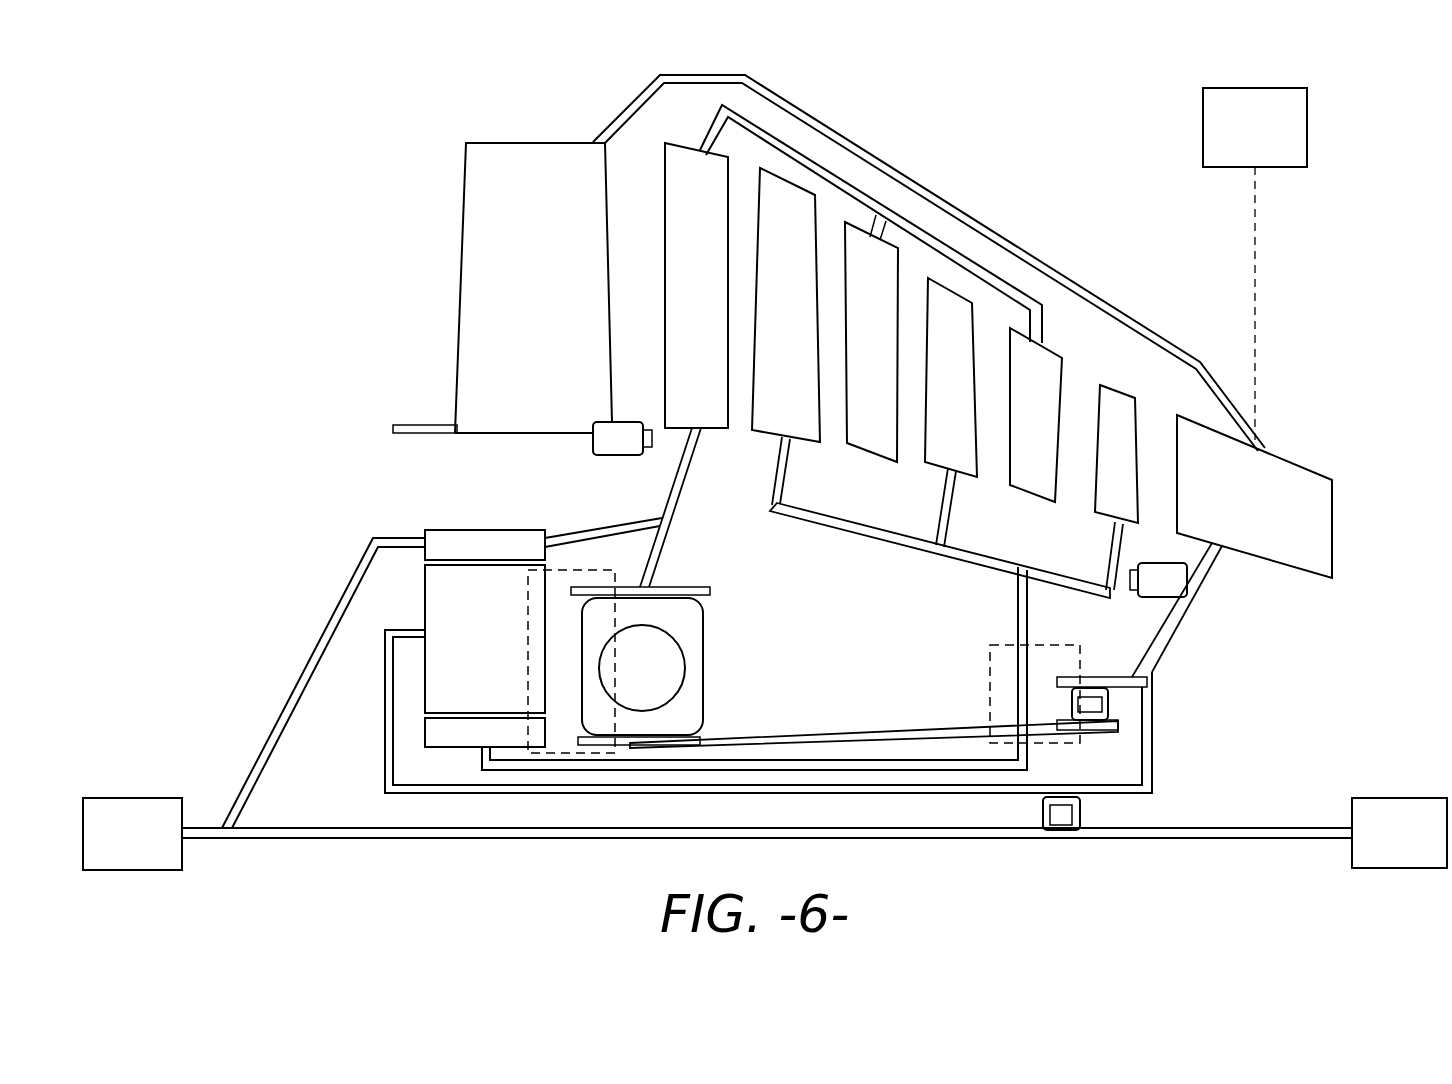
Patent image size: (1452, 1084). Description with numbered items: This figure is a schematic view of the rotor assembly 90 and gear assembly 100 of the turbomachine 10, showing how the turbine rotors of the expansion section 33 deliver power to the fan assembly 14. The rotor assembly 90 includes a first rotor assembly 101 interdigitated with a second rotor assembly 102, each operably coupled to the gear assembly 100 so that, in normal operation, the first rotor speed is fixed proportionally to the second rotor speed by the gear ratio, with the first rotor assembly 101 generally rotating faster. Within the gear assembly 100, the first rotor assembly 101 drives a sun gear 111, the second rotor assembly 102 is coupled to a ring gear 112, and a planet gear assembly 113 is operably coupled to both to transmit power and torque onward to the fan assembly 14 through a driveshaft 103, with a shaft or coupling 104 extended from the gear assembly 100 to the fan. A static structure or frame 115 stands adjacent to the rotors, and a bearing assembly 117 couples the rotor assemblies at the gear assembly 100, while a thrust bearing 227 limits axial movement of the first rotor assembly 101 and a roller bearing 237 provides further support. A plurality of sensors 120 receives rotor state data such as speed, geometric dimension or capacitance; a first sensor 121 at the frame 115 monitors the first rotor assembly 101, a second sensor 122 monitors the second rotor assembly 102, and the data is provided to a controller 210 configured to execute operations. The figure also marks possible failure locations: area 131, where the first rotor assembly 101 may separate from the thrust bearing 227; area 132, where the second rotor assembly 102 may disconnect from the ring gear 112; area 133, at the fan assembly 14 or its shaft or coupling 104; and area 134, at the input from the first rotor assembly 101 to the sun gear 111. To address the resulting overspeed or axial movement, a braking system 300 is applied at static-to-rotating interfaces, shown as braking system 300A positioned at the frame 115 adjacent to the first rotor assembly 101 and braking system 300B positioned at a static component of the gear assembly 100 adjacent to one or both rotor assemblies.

The turbomachine 10 is at (370, 184).
The fan assembly 14 is at (132, 834).
The expansion section 33 is at (1399, 833).
The rotor assembly 90 is at (1010, 206).
The gear assembly 100 is at (423, 605).
The first rotor assembly 101 is at (1120, 382).
The second rotor assembly 102 is at (690, 505).
The driveshaft 103 is at (465, 840).
The shaft or coupling 104 is at (283, 733).
The sun gear 111 is at (462, 735).
The ring gear 112 is at (473, 540).
The planet gear assembly 113 is at (440, 680).
The static structure or frame 115 is at (631, 99).
The bearing assembly 117 is at (718, 633).
The sensors 120 is at (590, 440).
The first sensor 121 is at (1165, 598).
The second sensor 122 is at (623, 457).
The area 131 is at (813, 727).
The area 132 is at (583, 515).
The area 133 is at (283, 675).
The area 134 is at (815, 772).
The controller 210 is at (1255, 264).
The thrust bearing 227 is at (703, 688).
The roller bearing 237 is at (1110, 703).
The braking system 300 is at (1012, 640).
The braking system 300A is at (990, 668).
The braking system 300B is at (528, 688).